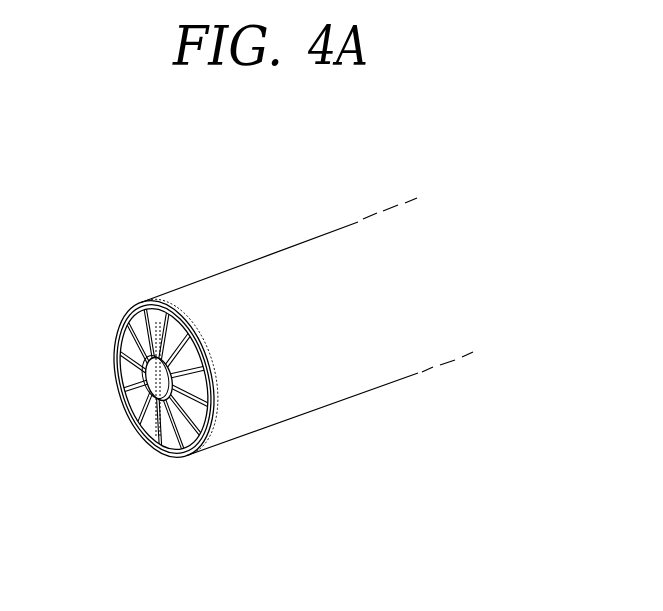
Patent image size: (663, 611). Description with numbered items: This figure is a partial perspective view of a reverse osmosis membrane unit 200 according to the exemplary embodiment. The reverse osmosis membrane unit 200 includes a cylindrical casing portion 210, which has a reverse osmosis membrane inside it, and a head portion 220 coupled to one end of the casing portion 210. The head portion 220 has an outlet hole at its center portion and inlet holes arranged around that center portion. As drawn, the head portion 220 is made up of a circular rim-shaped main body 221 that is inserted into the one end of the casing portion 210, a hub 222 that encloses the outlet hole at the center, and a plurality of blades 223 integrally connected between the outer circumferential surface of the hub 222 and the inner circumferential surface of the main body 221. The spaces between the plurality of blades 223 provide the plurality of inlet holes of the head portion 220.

The reverse osmosis membrane unit 200 is at (299, 197).
The casing portion 210 is at (280, 288).
The head portion 220 is at (208, 527).
The main body 221 is at (146, 402).
The hub 222 is at (139, 424).
The blades 223 is at (172, 447).